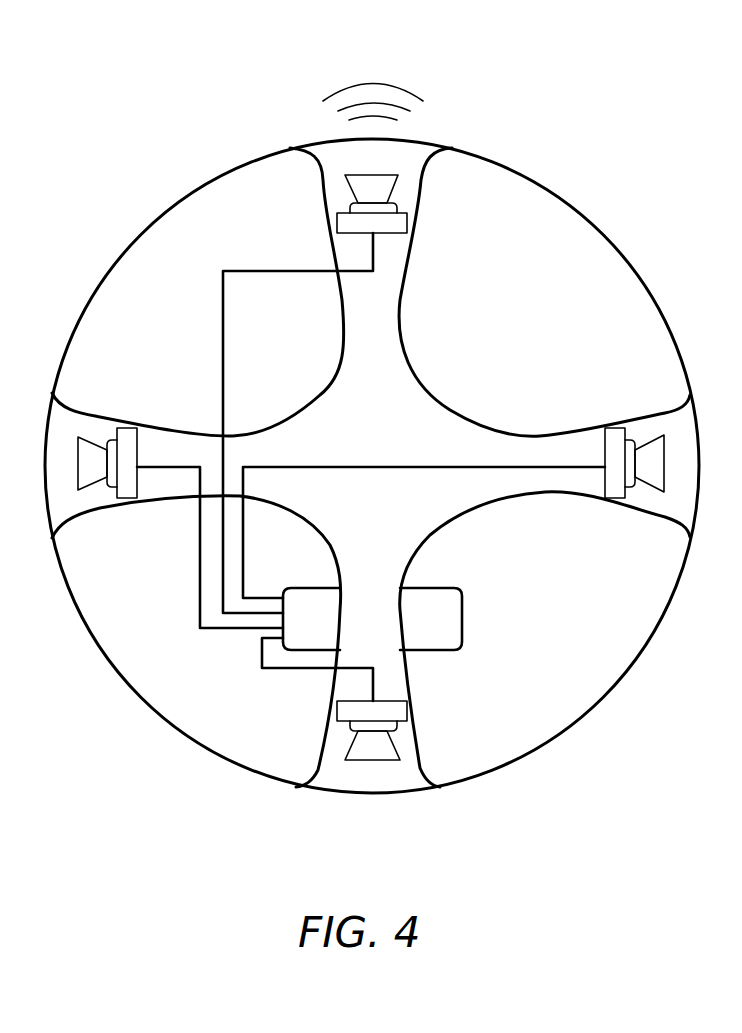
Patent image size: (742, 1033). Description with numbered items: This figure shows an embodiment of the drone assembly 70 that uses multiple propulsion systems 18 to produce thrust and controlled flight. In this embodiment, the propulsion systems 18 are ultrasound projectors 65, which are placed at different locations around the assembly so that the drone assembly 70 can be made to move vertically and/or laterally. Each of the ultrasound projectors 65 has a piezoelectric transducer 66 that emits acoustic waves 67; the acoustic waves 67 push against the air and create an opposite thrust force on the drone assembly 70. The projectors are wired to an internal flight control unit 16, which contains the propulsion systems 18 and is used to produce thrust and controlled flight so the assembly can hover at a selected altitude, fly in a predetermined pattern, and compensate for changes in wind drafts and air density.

The flight control unit 16 is at (462, 615).
The propulsion system 18 is at (356, 149).
The ultrasound projector 65 is at (357, 174).
The piezoelectric transducer 66 is at (343, 222).
The acoustic waves 67 is at (423, 100).
The drone assembly 70 is at (657, 263).